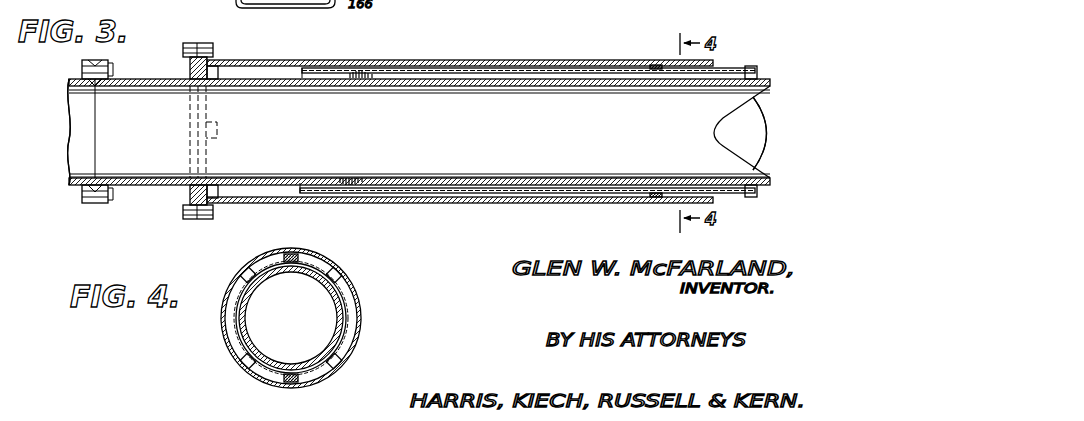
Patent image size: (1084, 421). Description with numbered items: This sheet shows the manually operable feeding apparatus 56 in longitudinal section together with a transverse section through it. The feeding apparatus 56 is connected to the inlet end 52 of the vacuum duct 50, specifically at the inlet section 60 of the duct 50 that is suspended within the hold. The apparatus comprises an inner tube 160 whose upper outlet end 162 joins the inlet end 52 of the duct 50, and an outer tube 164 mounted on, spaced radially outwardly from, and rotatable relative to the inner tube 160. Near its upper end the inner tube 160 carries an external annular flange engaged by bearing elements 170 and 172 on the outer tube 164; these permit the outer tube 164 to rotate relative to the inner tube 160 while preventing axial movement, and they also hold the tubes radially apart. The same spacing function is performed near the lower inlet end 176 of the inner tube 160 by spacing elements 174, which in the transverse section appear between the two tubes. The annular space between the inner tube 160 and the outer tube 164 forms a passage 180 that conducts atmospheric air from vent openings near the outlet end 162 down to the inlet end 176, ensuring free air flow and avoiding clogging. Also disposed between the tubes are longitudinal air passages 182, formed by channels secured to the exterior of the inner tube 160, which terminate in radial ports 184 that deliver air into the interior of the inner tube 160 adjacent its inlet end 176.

In FIG. 3, the duct 50 is at (66, 80).
In FIG. 3, the inlet end 52 is at (95, 205).
In FIG. 3, the feeding apparatus 56 is at (567, 58).
In FIG. 3, the inlet section 60 is at (66, 133).
In FIG. 3, the inner tube 160 is at (148, 186).
In FIG. 4, the inner tube 160 is at (342, 310).
In FIG. 3, the outlet end 162 is at (102, 62).
In FIG. 3, the outer tube 164 is at (385, 60).
In FIG. 4, the outer tube 164 is at (360, 332).
In FIG. 3, the bearing element 170 is at (190, 70).
In FIG. 3, the bearing element 172 is at (215, 66).
In FIG. 3, the spacing elements 174 is at (656, 64).
In FIG. 4, the spacing elements 174 is at (338, 276).
In FIG. 3, the inlet end 176 is at (781, 110).
In FIG. 3, the passage means 180 is at (465, 68).
In FIG. 4, the passage means 180 is at (350, 293).
In FIG. 3, the longitudinal air passages 182 is at (514, 70).
In FIG. 4, the longitudinal air passages 182 is at (300, 262).
In FIG. 3, the radial ports 184 is at (750, 66).